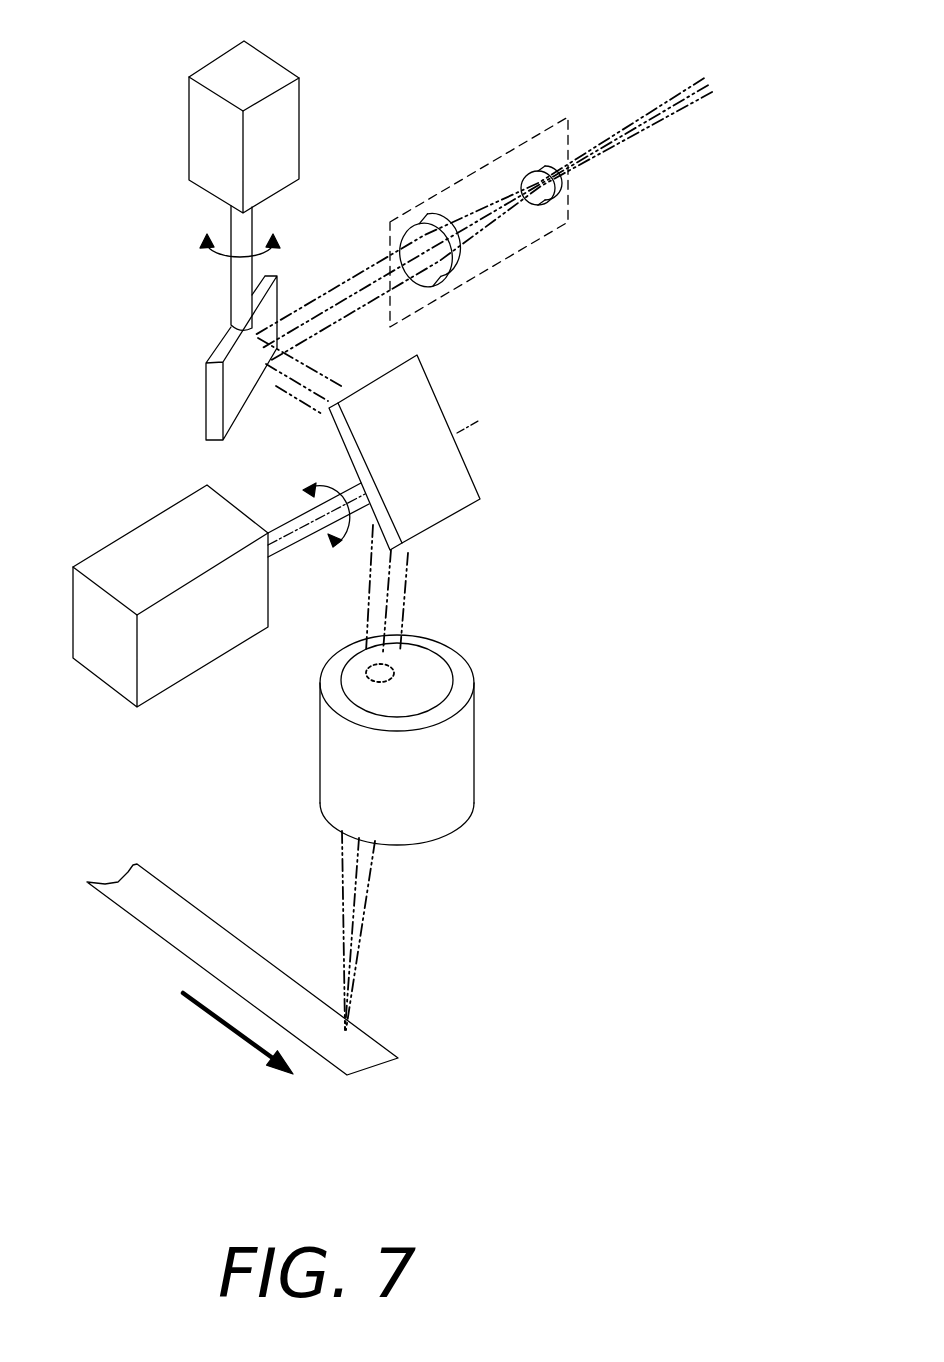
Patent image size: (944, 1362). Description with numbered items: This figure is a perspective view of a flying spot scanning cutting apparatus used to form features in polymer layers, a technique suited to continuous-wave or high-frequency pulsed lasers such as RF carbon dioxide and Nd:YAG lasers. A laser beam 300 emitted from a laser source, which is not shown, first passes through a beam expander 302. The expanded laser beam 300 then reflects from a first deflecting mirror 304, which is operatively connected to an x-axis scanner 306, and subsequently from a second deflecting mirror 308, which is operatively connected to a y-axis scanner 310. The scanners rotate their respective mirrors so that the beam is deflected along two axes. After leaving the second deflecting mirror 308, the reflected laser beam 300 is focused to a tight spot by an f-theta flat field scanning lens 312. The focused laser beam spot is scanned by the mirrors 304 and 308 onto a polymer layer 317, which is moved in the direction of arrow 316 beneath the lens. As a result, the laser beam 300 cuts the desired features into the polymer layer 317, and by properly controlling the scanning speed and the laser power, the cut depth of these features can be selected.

The laser beam 300 is at (630, 118).
The beam expander 302 is at (497, 264).
The first deflecting mirror 304 is at (212, 397).
The x-axis scanner 306 is at (198, 133).
The second deflecting mirror 308 is at (453, 467).
The y-axis scanner 310 is at (188, 660).
The f-theta flat field scanning lens 312 is at (458, 764).
The arrow 316 is at (227, 1030).
The polymer layer 317 is at (183, 955).